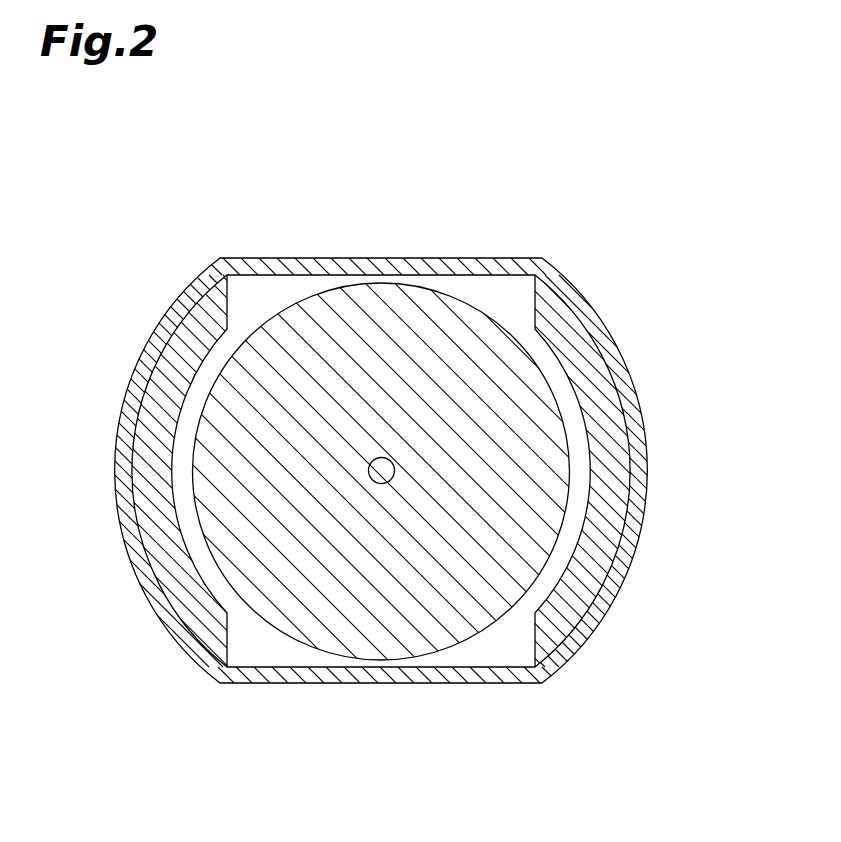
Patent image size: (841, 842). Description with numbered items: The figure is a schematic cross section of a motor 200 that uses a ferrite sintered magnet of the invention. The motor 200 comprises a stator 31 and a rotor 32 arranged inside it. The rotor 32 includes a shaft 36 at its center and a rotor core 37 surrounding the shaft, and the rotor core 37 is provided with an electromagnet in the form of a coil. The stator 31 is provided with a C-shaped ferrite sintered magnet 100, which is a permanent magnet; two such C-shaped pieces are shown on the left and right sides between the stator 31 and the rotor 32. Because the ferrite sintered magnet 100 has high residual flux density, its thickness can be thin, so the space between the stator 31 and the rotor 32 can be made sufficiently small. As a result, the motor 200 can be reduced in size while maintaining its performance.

The motor 200 is at (653, 192).
The stator 31 is at (640, 498).
The rotor 32 is at (420, 468).
The shaft 36 is at (372, 477).
The rotor core 37 is at (530, 378).
The ferrite sintered magnet 100 is at (145, 475).